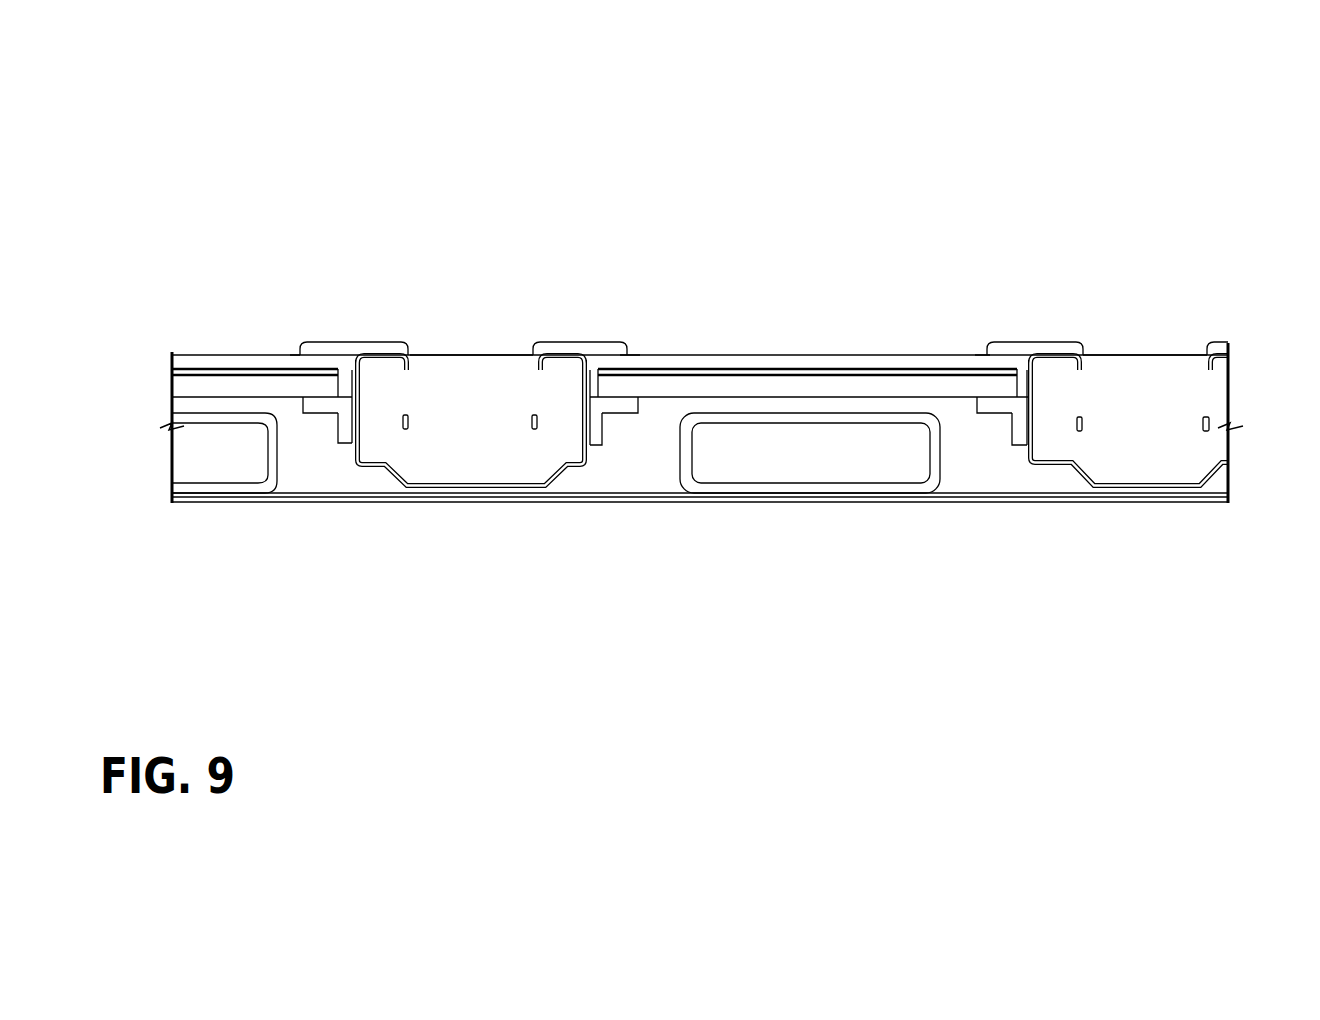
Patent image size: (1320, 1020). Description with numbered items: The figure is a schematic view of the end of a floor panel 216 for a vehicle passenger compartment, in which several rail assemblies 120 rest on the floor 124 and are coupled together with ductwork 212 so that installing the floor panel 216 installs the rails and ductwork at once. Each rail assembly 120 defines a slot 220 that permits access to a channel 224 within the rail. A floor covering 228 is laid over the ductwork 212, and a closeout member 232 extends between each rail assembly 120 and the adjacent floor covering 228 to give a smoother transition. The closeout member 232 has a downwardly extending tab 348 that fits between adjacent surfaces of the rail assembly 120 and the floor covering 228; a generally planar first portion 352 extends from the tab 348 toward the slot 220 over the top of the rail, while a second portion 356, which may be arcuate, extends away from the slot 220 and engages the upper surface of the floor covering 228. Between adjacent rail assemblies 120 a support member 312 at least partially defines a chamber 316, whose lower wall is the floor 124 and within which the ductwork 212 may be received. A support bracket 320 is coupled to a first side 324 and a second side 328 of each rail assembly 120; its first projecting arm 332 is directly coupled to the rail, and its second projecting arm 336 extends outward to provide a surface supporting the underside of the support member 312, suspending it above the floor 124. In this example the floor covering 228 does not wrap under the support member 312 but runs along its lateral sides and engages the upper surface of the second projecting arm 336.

The rail assembly 120 is at (700, 543).
The floor 124 is at (720, 552).
The ductwork 212 is at (551, 500).
The floor panel 216 is at (691, 289).
The slot 220 is at (830, 287).
The channel 224 is at (793, 482).
The floor covering 228 is at (685, 310).
The closeout member 232 is at (808, 258).
The support member 312 is at (594, 297).
The chamber 316 is at (700, 527).
The support bracket 320 is at (660, 533).
The first side 324 is at (713, 506).
The second side 328 is at (588, 496).
The first projecting arm 332 is at (667, 524).
The second projecting arm 336 is at (600, 311).
The tab 348 is at (791, 269).
The first portion 352 is at (764, 284).
The second portion 356 is at (637, 287).